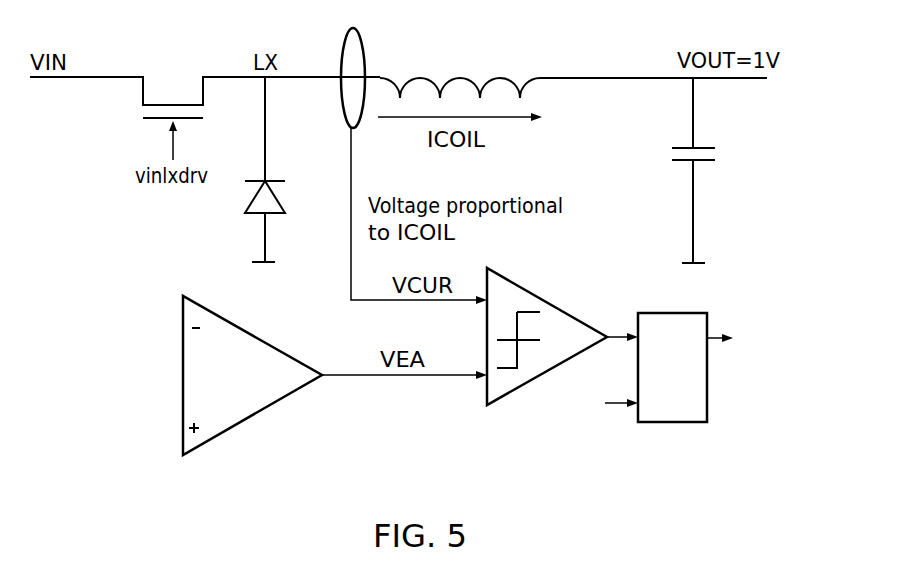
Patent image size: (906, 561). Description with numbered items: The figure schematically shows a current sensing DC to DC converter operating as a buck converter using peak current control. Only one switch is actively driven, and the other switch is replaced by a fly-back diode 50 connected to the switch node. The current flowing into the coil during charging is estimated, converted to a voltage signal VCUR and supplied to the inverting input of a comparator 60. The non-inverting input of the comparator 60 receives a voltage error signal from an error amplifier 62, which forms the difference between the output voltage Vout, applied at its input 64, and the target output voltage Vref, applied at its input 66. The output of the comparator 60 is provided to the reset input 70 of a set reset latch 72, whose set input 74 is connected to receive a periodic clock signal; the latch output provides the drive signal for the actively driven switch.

The fly-back diode 50 is at (280, 203).
The comparator 60 is at (487, 407).
The error amplifier 62 is at (253, 415).
The inverting input of error amplifier (VOUT) 64 is at (178, 313).
The non-inverting input of error amplifier (VREF) 66 is at (172, 438).
The reset input 70 is at (635, 323).
The set reset latch 72 is at (710, 320).
The set input 74 is at (635, 413).